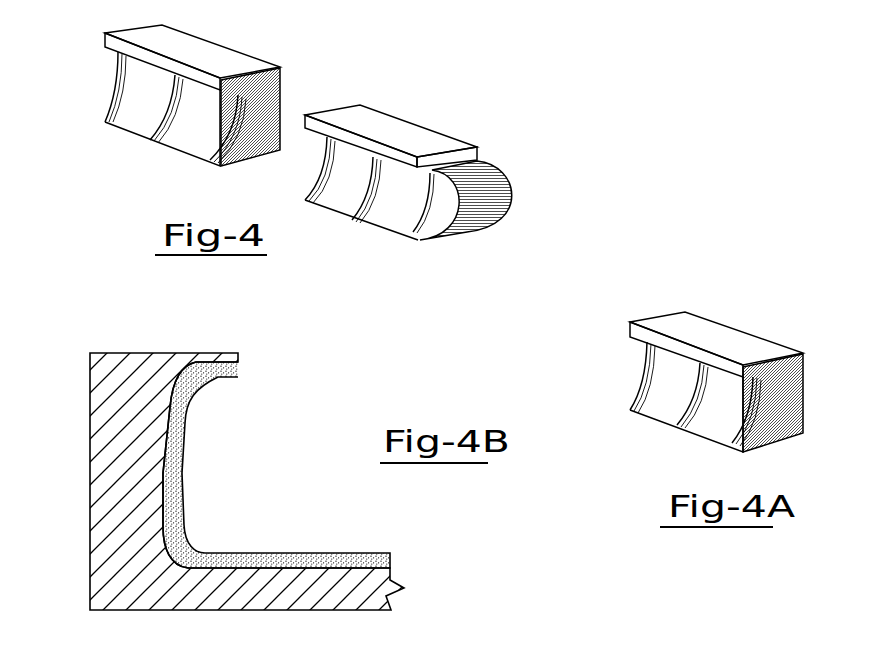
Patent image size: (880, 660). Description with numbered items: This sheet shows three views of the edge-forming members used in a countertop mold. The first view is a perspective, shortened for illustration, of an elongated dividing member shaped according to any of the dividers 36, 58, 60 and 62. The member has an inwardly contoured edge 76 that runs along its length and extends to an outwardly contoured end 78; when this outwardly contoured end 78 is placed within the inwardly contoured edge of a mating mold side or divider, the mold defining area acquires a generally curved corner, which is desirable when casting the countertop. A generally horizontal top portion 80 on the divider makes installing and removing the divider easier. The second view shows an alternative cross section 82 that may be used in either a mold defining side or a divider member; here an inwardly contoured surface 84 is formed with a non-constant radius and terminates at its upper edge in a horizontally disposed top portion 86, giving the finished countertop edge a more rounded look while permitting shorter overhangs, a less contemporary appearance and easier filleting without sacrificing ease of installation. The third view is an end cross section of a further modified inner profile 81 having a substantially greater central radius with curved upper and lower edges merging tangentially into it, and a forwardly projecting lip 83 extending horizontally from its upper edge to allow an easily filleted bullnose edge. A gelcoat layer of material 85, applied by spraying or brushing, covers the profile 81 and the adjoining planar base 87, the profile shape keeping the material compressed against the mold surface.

In FIG. 4, the divider 36 is at (331, 147).
In FIG. 4, the divider 58 is at (331, 147).
In FIG. 4, the divider 60 is at (331, 147).
In FIG. 4, the divider 62 is at (523, 147).
In FIG. 4, the inwardly contoured edge 76 is at (438, 208).
In FIG. 4, the outwardly contoured end 78 is at (485, 223).
In FIG. 4, the horizontally disposed top portion 80 is at (317, 122).
In FIG. 4A, the alternative cross section 82 is at (645, 306).
In FIG. 4A, the inwardly contoured surface 84 is at (763, 413).
In FIG. 4A, the horizontally disposed top portion 86 is at (675, 347).
In FIG. 4B, the modified inner profile 81 is at (180, 485).
In FIG. 4B, the forwardly projecting lip 83 is at (220, 378).
In FIG. 4B, the gelcoat layer of material 85 is at (272, 553).
In FIG. 4B, the planar base 87 is at (360, 566).